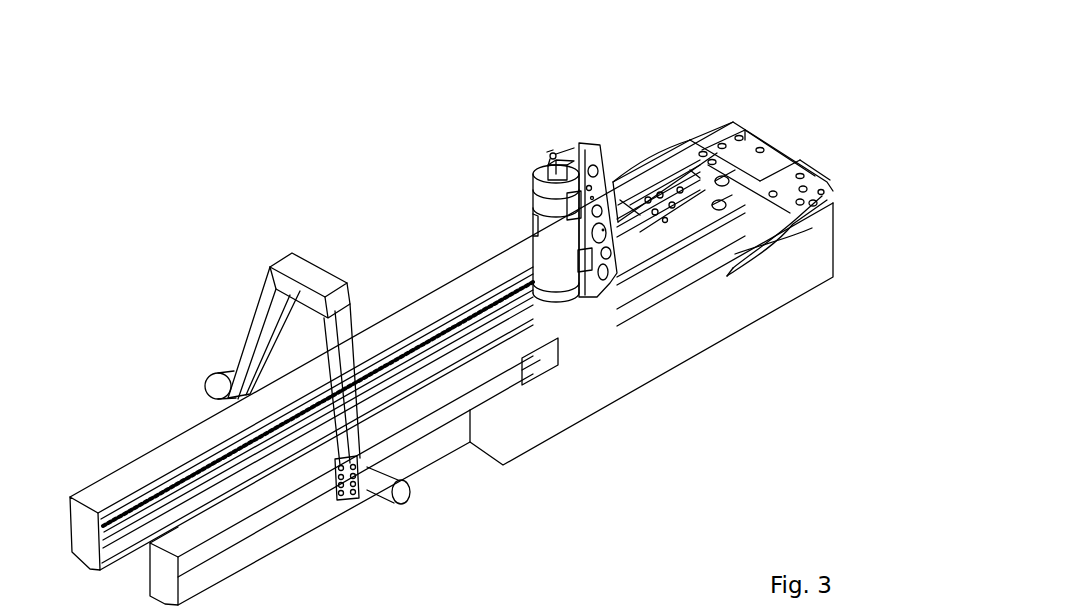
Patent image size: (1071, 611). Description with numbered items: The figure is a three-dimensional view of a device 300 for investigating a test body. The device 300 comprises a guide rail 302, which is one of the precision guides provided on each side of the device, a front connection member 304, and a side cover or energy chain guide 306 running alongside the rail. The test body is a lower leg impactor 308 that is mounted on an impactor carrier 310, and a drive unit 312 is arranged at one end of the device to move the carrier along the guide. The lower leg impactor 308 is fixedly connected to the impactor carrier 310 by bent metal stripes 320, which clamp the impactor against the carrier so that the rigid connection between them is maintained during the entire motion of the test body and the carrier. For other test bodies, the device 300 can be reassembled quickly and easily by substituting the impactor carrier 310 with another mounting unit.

The device 300 is at (800, 126).
The guide rail 302 is at (162, 478).
The front connection member 304 is at (257, 312).
The side cover or energy chain guide 306 is at (647, 360).
The lower leg impactor 308 is at (562, 258).
The impactor carrier 310 is at (580, 143).
The drive unit 312 is at (643, 198).
The bent metal stripes 320 is at (532, 236).